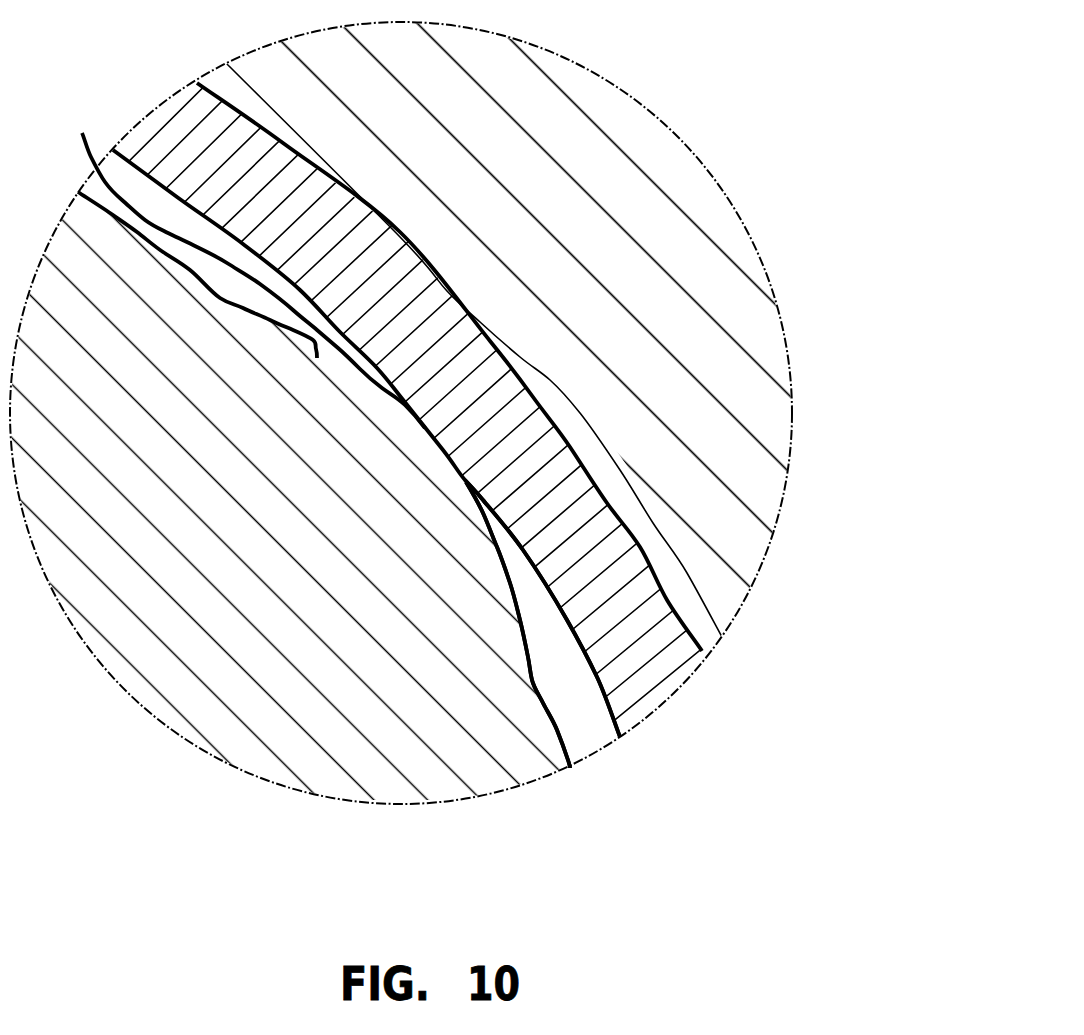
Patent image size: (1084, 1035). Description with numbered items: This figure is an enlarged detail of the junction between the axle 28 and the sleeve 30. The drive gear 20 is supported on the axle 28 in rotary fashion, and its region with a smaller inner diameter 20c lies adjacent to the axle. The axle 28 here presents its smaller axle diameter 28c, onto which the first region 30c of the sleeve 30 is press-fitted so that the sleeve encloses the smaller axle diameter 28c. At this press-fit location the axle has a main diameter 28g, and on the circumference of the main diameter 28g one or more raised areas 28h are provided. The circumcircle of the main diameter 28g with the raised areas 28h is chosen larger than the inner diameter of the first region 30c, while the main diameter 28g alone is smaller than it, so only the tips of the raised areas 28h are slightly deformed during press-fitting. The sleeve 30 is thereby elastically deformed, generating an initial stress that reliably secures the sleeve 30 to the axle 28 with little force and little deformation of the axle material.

The drive gear 20 is at (675, 163).
The region with smaller inner diameter 20c is at (700, 648).
The axle 28 is at (259, 757).
The smaller axle diameter 28c is at (492, 780).
The main diameter 28g is at (567, 737).
The raised area 28h is at (91, 157).
The sleeve 30 is at (680, 670).
The first region of the sleeve 30c is at (642, 703).